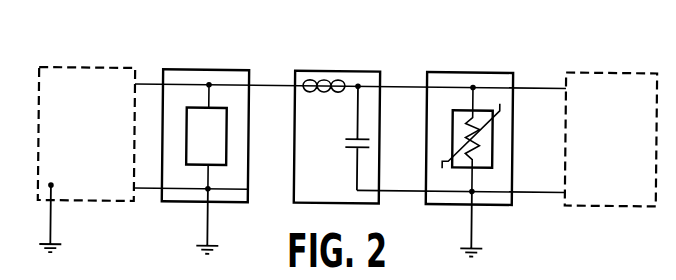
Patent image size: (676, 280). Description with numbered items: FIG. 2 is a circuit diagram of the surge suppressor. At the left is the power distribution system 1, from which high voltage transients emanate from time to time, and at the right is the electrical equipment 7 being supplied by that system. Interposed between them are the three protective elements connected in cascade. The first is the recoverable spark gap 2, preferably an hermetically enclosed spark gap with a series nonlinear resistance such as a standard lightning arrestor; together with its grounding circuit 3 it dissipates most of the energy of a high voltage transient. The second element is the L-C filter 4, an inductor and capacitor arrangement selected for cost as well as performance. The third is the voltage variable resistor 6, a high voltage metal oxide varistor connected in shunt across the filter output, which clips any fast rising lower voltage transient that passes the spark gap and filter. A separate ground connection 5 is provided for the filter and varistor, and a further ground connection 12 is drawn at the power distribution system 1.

The power distribution system 1 is at (74, 62).
The recoverable spark gap 2 is at (233, 63).
The grounding circuit 3 is at (219, 243).
The L-C filter 4 is at (345, 62).
The separate ground connection 5 is at (483, 244).
The voltage variable resistor 6 is at (493, 61).
The electrical equipment 7 is at (598, 60).
The ground connection of power source 12 is at (57, 243).